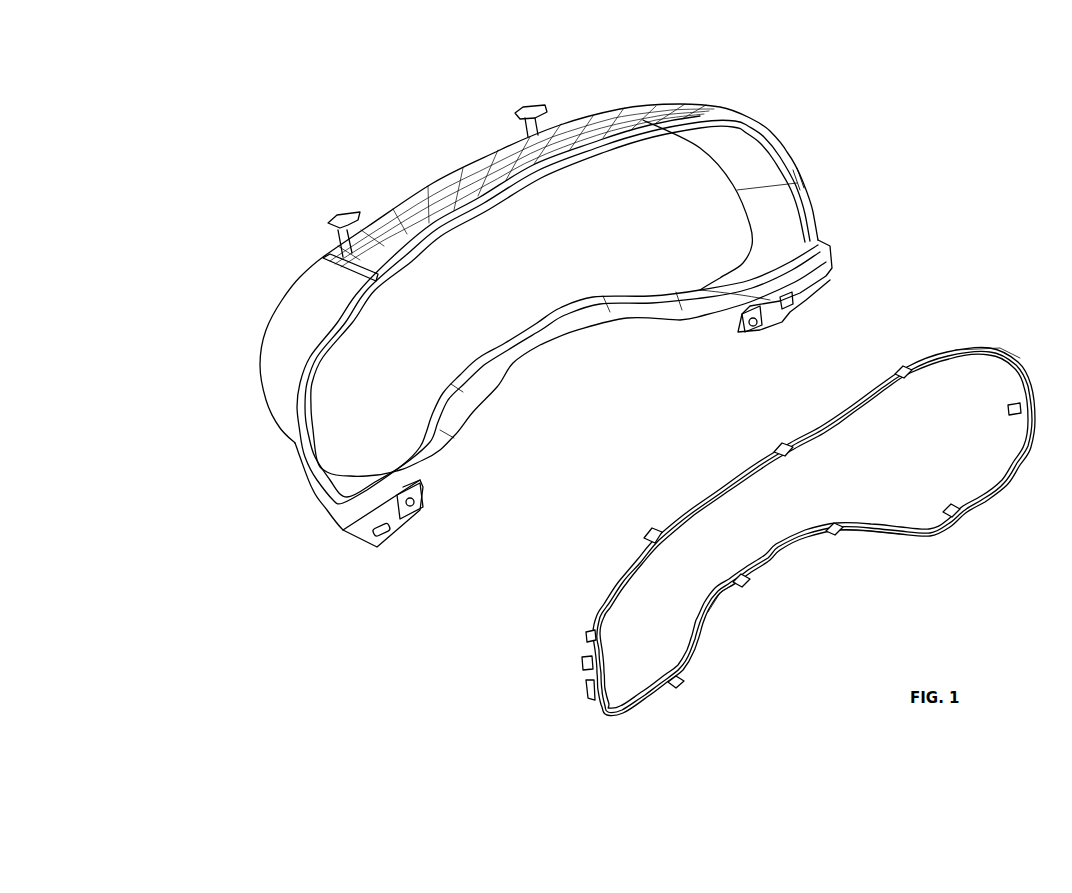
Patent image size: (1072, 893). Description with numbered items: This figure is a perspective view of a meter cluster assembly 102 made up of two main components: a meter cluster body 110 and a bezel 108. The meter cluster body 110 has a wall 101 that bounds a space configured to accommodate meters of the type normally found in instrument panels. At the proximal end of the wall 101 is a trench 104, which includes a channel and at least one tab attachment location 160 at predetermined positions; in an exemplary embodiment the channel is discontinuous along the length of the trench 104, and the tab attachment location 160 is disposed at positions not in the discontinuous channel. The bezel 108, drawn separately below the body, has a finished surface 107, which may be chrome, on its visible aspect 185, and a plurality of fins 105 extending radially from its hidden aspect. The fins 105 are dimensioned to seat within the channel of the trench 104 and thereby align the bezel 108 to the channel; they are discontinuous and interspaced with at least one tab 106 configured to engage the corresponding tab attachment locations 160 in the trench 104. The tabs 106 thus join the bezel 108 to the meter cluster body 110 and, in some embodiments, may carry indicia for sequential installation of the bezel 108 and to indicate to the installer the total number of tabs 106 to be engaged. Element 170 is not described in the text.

The wall 101 is at (286, 316).
The meter cluster assembly 102 is at (563, 797).
The trench 104 is at (690, 316).
The fins 105 is at (592, 637).
The tab 106 is at (659, 530).
The finished surface 107 is at (991, 347).
The bezel 108 is at (870, 532).
The meter cluster body 110 is at (637, 32).
The tab attachment location 160 is at (802, 178).
The rim of opening 170 is at (780, 133).
The visible aspect 185 is at (716, 630).